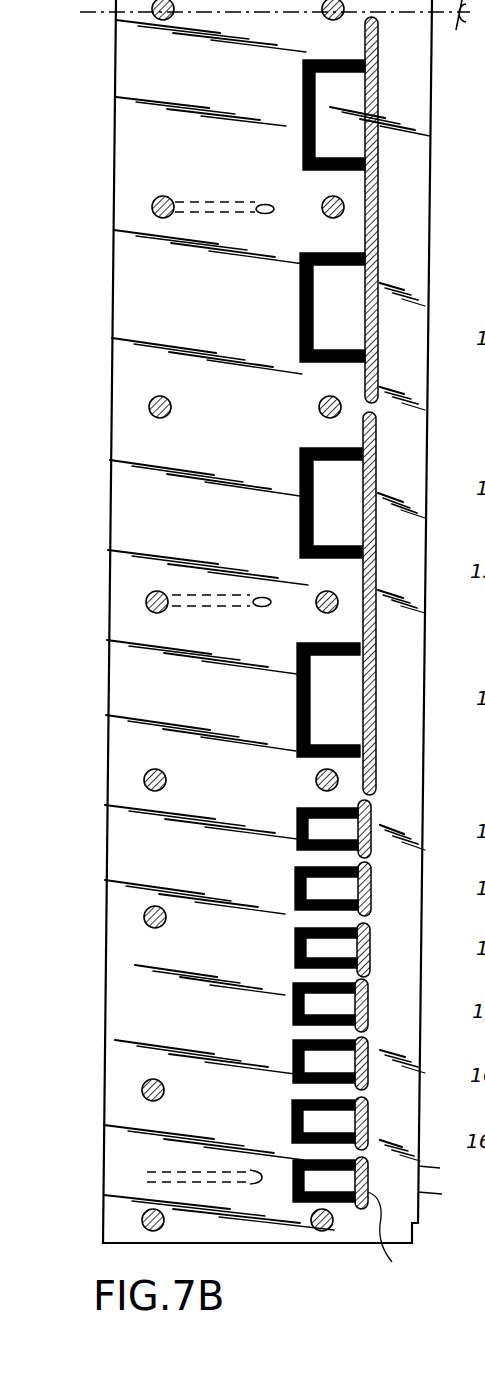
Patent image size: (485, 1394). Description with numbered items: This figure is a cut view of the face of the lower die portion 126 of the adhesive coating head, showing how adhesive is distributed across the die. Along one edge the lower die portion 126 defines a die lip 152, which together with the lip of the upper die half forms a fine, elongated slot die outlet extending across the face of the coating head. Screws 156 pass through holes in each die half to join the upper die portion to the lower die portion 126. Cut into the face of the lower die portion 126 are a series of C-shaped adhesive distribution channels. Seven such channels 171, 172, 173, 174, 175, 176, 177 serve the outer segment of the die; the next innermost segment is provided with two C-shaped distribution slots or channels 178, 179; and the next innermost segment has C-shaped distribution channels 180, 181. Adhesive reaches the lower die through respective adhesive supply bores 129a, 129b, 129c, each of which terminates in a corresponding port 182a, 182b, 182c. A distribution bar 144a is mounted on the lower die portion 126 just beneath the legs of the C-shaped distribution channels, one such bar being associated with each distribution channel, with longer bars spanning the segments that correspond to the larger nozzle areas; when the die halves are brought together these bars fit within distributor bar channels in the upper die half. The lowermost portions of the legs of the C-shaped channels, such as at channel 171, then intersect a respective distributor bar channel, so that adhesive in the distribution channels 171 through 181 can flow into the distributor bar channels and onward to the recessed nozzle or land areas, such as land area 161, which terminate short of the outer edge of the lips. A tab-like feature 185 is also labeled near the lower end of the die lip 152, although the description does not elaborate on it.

The lower die portion 126 is at (268, 1247).
The die lip 152 is at (428, 636).
The screws 156 is at (318, 407).
The C-shaped distribution channel 181 is at (303, 92).
The C-shaped distribution channel 180 is at (300, 317).
The C-shaped adhesive distribution channel 179 is at (300, 510).
The C-shaped adhesive distribution channel 178 is at (297, 703).
The C-shaped adhesive distribution channel 177 is at (297, 840).
The C-shaped adhesive distribution channel 176 is at (295, 883).
The C-shaped adhesive distribution channel 175 is at (295, 947).
The C-shaped adhesive distribution channel 174 is at (293, 1008).
The C-shaped adhesive distribution channel 173 is at (293, 1070).
The C-shaped adhesive distribution channel 172 is at (292, 1122).
The C-shaped adhesive distribution channel 171 is at (293, 1170).
The distribution bar 144a is at (409, 1237).
The tab 185 is at (450, 1168).
The nozzle or land area 161 is at (451, 1193).
The adhesive supply bore 129a is at (165, 1165).
The adhesive supply bore 129b is at (232, 612).
The adhesive supply bore 129c is at (186, 178).
The port 182a is at (263, 1184).
The port 182b is at (260, 598).
The port 182c is at (270, 218).